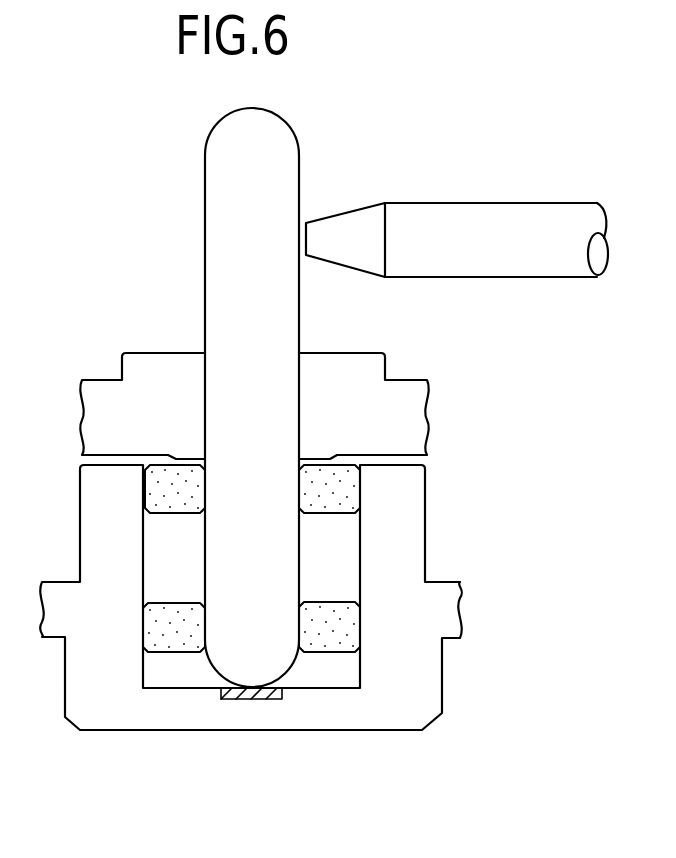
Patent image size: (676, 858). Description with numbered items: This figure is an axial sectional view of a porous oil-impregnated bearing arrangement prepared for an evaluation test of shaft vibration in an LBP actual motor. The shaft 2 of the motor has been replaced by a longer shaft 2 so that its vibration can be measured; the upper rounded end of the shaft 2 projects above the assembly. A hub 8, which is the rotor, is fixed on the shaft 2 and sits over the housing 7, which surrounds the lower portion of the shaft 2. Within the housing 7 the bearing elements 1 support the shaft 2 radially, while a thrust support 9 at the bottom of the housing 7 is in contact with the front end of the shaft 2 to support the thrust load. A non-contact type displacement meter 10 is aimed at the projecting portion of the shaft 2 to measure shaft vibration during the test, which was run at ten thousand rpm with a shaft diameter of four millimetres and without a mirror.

The rubber insert 1 is at (350, 493).
The shaft 2 is at (214, 323).
The housing 7 is at (427, 687).
The hub 8 is at (410, 418).
The thrust support 9 is at (258, 701).
The non-contact type displacement meter 10 is at (527, 220).